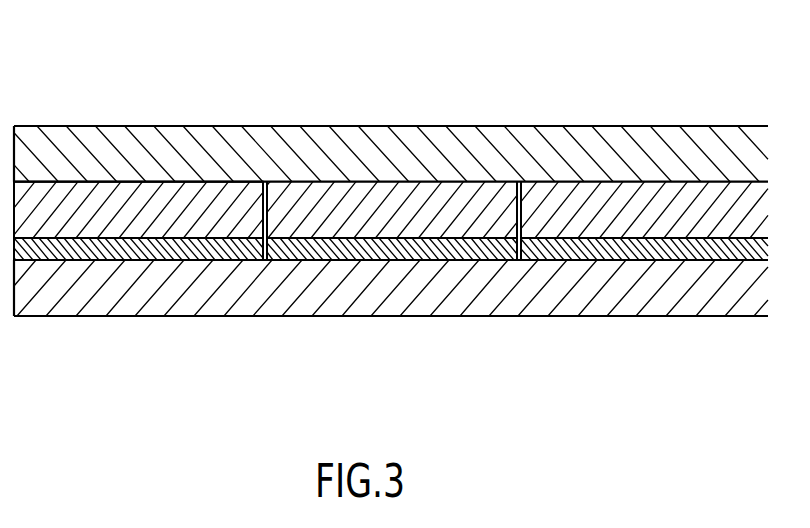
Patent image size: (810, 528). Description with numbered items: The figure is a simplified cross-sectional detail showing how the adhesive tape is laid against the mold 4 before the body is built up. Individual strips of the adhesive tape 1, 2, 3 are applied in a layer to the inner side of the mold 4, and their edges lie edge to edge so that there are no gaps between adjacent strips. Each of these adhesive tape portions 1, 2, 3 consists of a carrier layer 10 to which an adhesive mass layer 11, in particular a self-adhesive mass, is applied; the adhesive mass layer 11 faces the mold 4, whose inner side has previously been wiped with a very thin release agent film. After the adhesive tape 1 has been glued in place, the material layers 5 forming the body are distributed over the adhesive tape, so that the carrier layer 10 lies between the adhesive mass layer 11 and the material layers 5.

The adhesive tape 1 is at (190, 207).
The adhesive tape 2 is at (425, 205).
The adhesive tape 3 is at (650, 207).
The mold 4 is at (615, 293).
The material layers 5 is at (507, 143).
The carrier layer 10 is at (172, 210).
The adhesive mass layer 11 is at (70, 245).